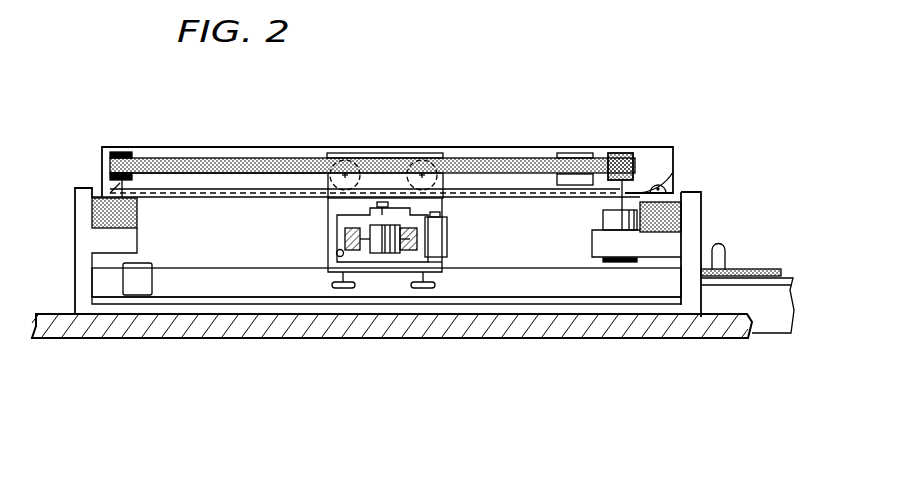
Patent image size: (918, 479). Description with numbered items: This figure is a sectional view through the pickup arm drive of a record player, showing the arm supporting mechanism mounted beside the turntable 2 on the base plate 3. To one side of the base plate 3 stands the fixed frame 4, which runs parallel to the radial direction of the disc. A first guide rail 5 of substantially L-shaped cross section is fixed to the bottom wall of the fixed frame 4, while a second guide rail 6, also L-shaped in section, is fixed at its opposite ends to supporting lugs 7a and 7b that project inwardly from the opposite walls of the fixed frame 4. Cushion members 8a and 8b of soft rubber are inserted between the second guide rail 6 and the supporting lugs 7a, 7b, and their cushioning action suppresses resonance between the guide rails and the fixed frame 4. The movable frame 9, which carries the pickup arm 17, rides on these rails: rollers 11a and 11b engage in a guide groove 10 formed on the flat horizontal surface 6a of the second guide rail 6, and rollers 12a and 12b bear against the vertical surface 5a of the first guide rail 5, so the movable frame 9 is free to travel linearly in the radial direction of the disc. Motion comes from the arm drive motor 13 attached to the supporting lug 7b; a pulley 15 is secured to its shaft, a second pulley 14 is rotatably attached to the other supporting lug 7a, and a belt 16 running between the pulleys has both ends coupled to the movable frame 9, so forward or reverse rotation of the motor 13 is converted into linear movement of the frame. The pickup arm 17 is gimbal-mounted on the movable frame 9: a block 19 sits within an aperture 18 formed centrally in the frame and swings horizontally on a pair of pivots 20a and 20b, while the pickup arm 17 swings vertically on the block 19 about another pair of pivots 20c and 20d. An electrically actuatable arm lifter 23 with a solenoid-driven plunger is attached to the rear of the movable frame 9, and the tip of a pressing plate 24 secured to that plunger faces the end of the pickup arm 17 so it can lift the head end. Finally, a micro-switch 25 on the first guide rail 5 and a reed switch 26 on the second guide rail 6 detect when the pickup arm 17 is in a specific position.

The turntable 2 is at (773, 320).
The base plate 3 is at (675, 322).
The fixed frame 4 is at (712, 300).
The first guide rail 5 is at (552, 290).
The vertical surface 5a is at (578, 298).
The second guide rail 6 is at (665, 147).
The flat horizontal surface 6a is at (650, 188).
The supporting lug 7a is at (140, 245).
The supporting lug 7b is at (591, 246).
The cushion member 8a is at (140, 212).
The cushion member 8b is at (672, 215).
The movable frame 9 is at (387, 148).
The guide groove 10 is at (197, 147).
The roller 11a is at (345, 148).
The roller 11b is at (425, 148).
The roller 12a is at (331, 285).
The roller 12b is at (437, 285).
The arm drive motor 13 is at (620, 240).
The pulley 14 is at (121, 150).
The pulley 15 is at (622, 152).
The belt 16 is at (508, 148).
The pickup arm 17 is at (338, 232).
The aperture 18 is at (337, 253).
The block 19 is at (390, 260).
The pivot 20a is at (337, 216).
The pivot 20b is at (386, 258).
The pivot 20c is at (442, 263).
The pivot 20d is at (380, 258).
The arm lifter 23 is at (437, 236).
The pressing plate 24 is at (445, 199).
The micro-switch 25 is at (133, 280).
The reed switch 26 is at (575, 148).